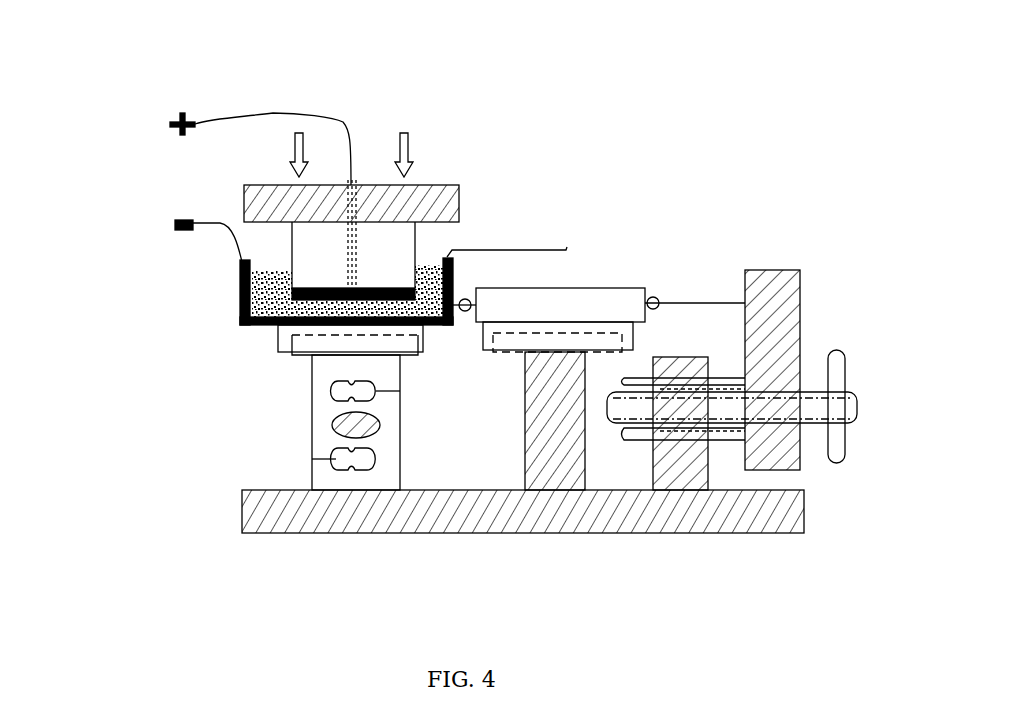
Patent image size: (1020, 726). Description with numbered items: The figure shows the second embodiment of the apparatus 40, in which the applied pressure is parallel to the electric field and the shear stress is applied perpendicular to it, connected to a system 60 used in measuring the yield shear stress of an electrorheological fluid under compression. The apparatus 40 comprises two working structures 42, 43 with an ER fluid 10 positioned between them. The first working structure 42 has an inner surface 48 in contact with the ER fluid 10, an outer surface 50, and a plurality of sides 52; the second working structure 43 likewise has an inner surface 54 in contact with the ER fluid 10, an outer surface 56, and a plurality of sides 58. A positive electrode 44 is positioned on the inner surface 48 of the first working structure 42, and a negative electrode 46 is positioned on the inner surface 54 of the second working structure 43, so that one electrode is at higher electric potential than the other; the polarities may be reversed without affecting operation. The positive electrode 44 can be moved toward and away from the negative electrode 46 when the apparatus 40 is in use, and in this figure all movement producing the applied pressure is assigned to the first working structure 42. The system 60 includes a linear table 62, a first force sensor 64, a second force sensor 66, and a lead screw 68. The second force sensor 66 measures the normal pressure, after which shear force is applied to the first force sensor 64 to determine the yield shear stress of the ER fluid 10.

The ER fluid 10 is at (242, 290).
The apparatus 40 is at (150, 180).
The first working structure 42 is at (458, 188).
The second working structure 43 is at (250, 327).
The positive electrode 44 is at (387, 286).
The negative electrode 46 is at (242, 318).
The inner surface 48 is at (303, 326).
The outer surface 50 is at (418, 184).
The sides 52 is at (244, 207).
The inner surface 54 is at (455, 276).
The outer surface 56 is at (393, 325).
The sides 58 is at (242, 270).
The system 60 is at (700, 230).
The linear table 62 is at (480, 348).
The first force sensor 64 is at (592, 297).
The second force sensor 66 is at (320, 395).
The lead screw 68 is at (745, 408).